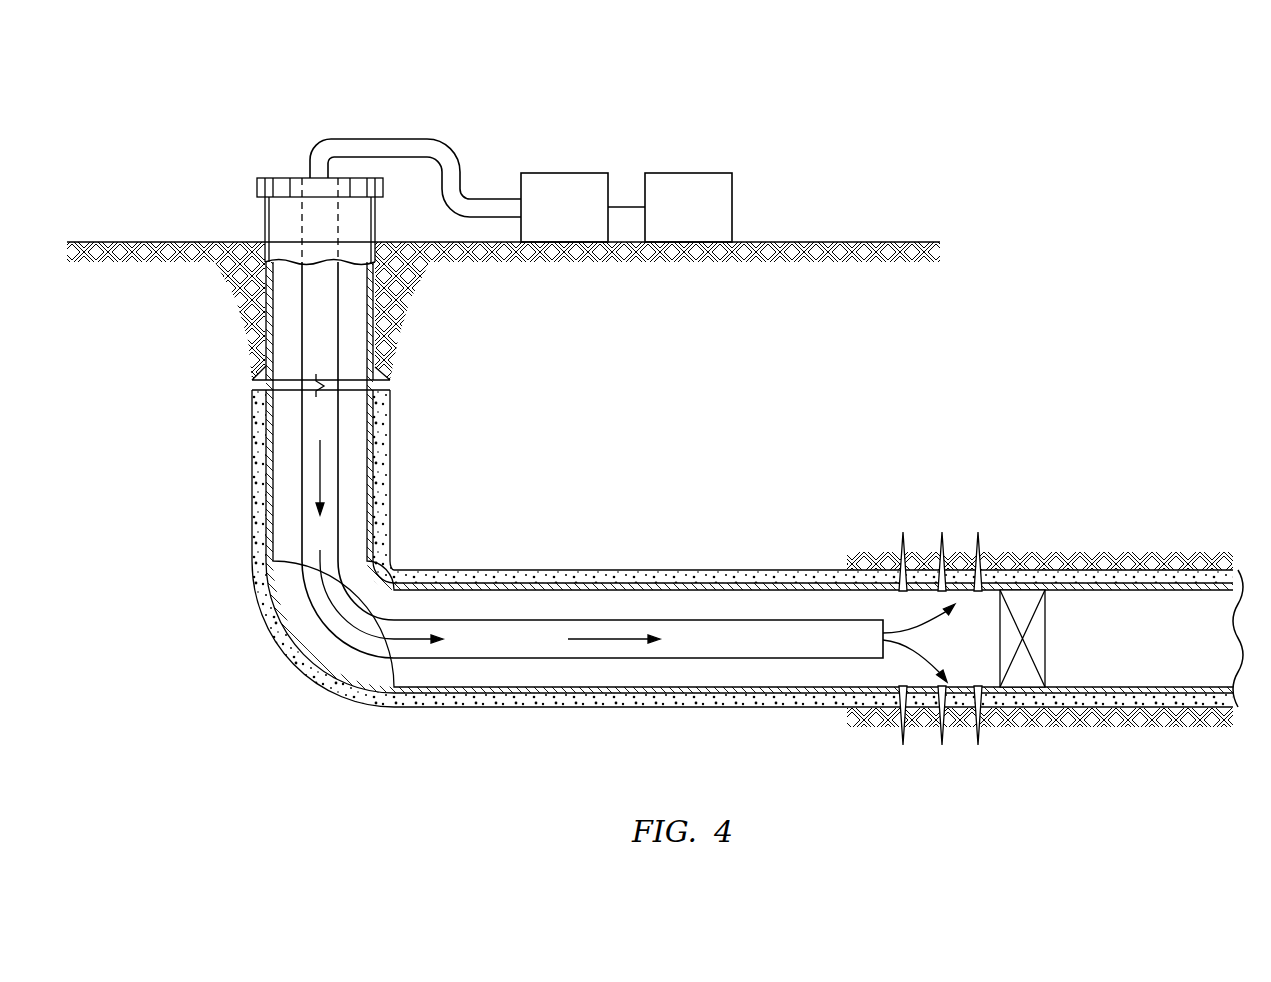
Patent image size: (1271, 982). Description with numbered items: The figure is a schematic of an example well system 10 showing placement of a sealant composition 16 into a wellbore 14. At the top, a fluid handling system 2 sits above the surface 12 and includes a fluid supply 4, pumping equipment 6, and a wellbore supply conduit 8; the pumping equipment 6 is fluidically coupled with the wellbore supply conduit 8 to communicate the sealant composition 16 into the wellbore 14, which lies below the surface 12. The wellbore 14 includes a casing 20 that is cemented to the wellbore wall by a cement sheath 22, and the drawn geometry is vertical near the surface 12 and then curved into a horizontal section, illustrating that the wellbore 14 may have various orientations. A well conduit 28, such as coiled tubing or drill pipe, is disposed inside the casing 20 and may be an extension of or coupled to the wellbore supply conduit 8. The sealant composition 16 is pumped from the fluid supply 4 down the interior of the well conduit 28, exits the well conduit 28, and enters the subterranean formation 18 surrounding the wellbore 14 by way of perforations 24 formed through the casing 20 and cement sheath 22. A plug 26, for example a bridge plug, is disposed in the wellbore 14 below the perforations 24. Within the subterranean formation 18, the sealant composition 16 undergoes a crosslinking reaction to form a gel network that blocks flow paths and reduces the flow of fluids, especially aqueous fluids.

The fluid handling system 2 is at (652, 156).
The fluid supply 4 is at (720, 172).
The pumping equipment 6 is at (578, 173).
The wellbore supply conduit 8 is at (385, 138).
The well system 10 is at (186, 144).
The surface 12 is at (797, 242).
The wellbore 14 is at (387, 520).
The sealant composition 16 is at (320, 460).
The subterranean formation 18 is at (836, 462).
The casing 20 is at (652, 584).
The cement sheath 22 is at (731, 571).
The perforations 24 is at (905, 545).
The plug 26 is at (1045, 613).
The well conduit 28 is at (762, 620).